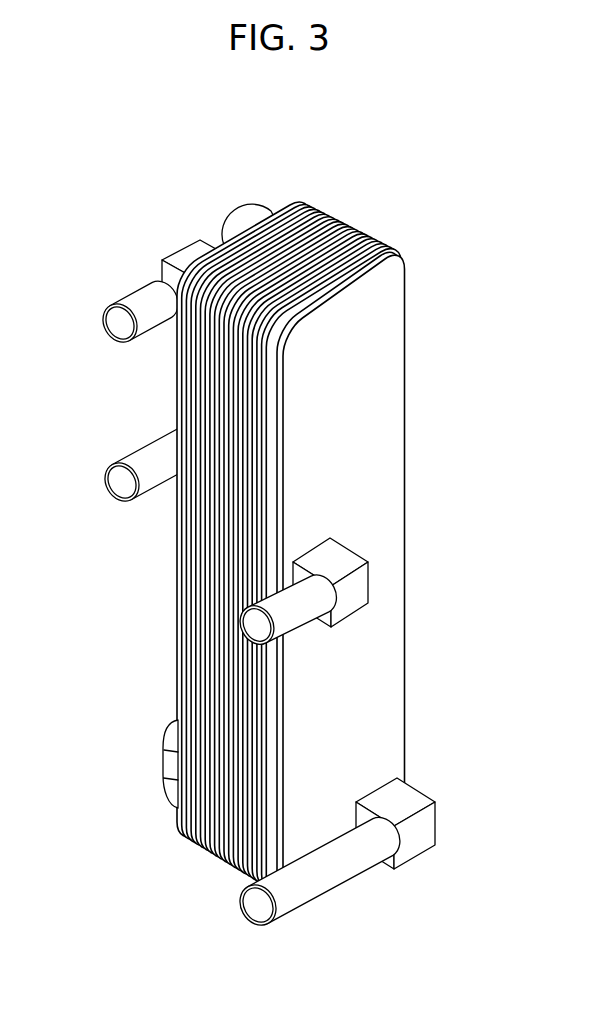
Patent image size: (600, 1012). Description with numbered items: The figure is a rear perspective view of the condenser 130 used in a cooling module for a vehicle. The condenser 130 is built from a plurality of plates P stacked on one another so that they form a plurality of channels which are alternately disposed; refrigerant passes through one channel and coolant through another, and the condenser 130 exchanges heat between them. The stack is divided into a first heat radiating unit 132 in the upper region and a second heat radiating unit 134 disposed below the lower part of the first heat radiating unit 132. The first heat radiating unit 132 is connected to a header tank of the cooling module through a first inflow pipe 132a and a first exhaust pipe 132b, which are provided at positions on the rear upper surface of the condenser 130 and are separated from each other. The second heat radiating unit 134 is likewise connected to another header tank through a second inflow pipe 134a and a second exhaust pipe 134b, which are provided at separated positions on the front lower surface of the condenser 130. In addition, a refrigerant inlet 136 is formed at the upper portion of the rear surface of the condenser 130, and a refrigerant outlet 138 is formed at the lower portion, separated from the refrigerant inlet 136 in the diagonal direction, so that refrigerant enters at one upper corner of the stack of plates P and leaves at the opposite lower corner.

The condenser 130 is at (104, 191).
The first heat radiating unit 132 is at (436, 260).
The first inflow pipe 132a is at (142, 301).
The first exhaust pipe 132b is at (142, 454).
The second heat radiating unit 134 is at (436, 458).
The second inflow pipe 134a is at (328, 873).
The second exhaust pipe 134b is at (268, 603).
The refrigerant inlet 136 is at (231, 199).
The refrigerant outlet 138 is at (153, 762).
The plate P is at (195, 838).